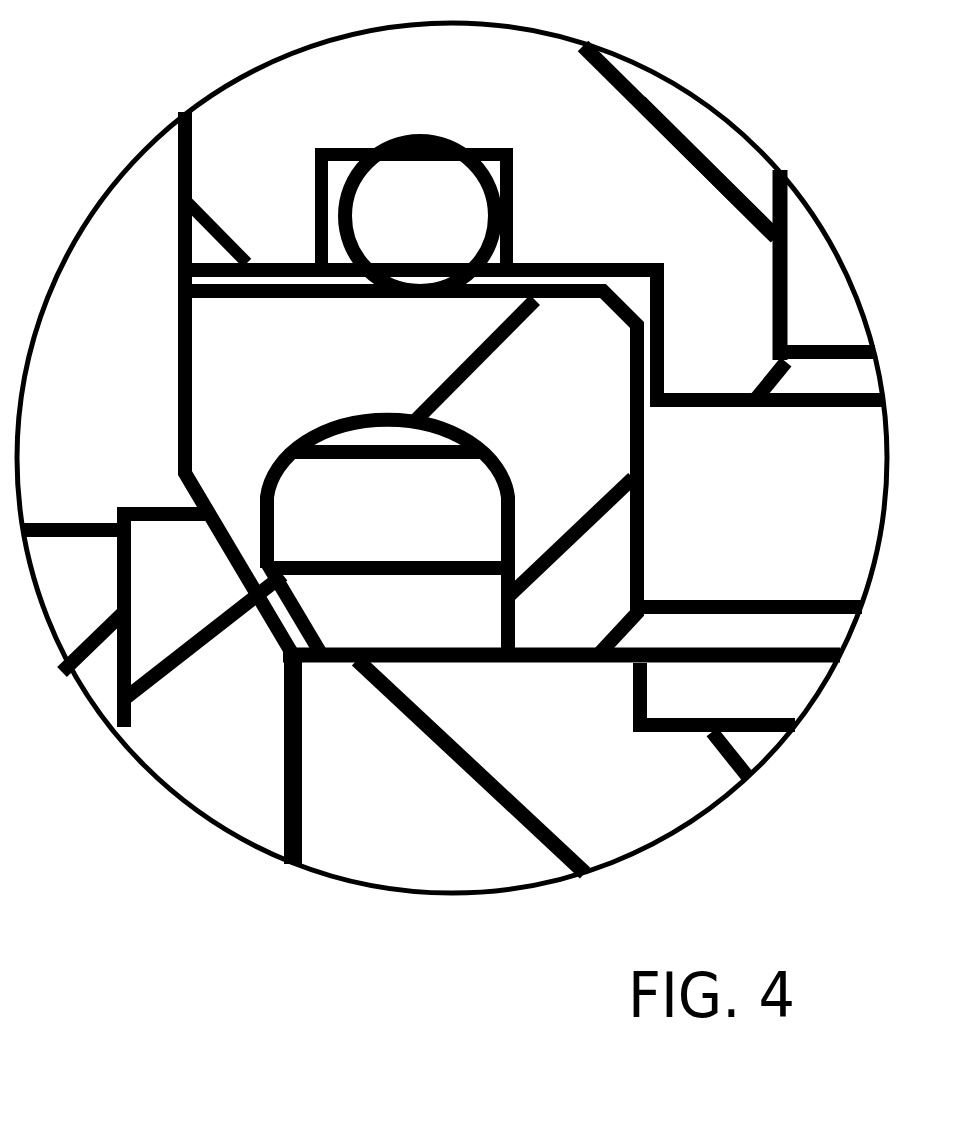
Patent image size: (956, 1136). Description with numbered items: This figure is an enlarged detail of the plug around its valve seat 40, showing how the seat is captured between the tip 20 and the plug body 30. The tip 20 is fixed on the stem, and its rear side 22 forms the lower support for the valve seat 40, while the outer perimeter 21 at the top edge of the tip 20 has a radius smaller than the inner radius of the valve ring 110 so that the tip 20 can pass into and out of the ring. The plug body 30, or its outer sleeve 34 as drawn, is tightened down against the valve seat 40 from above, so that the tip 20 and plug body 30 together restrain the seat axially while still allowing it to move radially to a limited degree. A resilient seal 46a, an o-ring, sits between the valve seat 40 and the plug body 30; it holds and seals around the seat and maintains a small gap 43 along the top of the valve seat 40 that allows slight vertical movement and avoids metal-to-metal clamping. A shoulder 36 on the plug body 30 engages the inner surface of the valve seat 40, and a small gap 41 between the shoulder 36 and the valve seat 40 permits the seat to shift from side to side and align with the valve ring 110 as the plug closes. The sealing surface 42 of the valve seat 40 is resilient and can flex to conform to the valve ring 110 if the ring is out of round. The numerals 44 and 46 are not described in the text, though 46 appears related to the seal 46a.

The tip 20 is at (597, 750).
The outer perimeter 21 is at (280, 668).
The rear side 22 is at (727, 663).
The plug body 30 is at (563, 98).
The outer sleeve 34 is at (642, 177).
The shoulder 36 is at (717, 347).
The valve seat 40 is at (272, 324).
The gap 41 is at (667, 353).
The sealing surface 42 is at (233, 563).
The gap 43 is at (663, 267).
The frame cavity 44 is at (560, 393).
The seal 46 is at (410, 537).
The seal 46a is at (400, 193).
The valve ring 110 is at (113, 565).